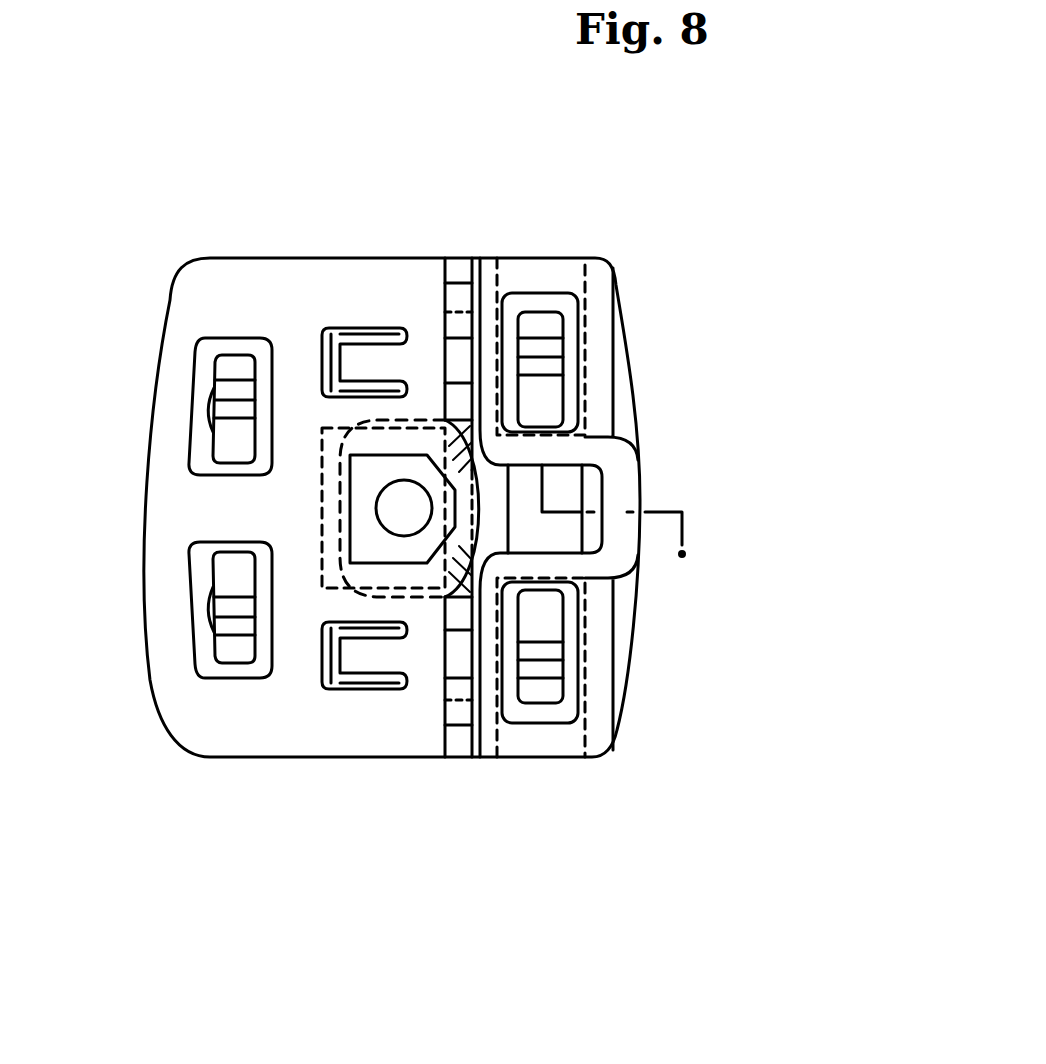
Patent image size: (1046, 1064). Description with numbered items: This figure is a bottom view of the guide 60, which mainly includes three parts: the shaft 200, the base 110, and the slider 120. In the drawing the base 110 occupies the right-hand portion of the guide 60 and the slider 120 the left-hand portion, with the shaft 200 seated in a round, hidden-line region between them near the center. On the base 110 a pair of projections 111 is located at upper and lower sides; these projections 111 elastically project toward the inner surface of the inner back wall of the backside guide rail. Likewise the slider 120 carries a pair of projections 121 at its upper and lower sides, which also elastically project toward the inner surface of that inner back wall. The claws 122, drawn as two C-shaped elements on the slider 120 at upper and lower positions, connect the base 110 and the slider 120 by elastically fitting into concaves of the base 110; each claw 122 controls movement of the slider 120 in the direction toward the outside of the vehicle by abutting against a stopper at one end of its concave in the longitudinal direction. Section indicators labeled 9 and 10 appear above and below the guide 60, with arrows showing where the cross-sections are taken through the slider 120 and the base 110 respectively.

The guide 60 is at (222, 136).
The shaft 200 is at (345, 435).
The slider 120 is at (184, 718).
The projections 121 is at (215, 390).
The claws 122 is at (363, 360).
The base 110 is at (603, 735).
The projections 111 is at (552, 350).
The section line 9 is at (405, 143).
The section line 10 is at (542, 192).